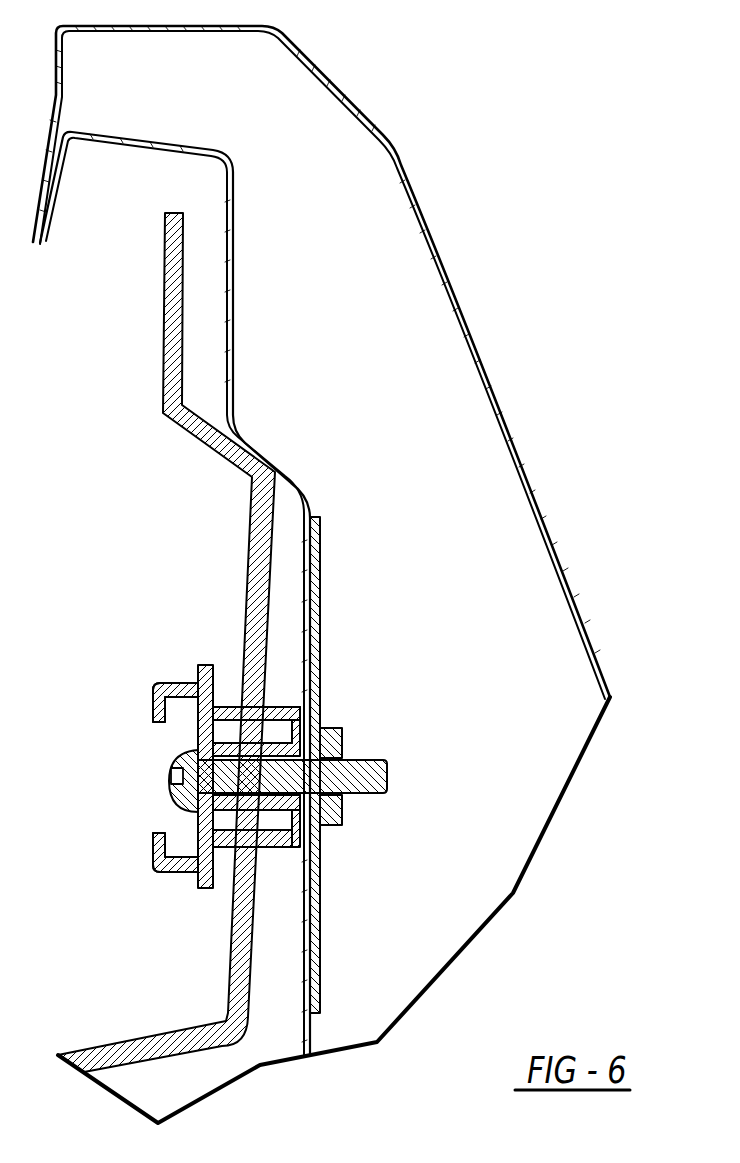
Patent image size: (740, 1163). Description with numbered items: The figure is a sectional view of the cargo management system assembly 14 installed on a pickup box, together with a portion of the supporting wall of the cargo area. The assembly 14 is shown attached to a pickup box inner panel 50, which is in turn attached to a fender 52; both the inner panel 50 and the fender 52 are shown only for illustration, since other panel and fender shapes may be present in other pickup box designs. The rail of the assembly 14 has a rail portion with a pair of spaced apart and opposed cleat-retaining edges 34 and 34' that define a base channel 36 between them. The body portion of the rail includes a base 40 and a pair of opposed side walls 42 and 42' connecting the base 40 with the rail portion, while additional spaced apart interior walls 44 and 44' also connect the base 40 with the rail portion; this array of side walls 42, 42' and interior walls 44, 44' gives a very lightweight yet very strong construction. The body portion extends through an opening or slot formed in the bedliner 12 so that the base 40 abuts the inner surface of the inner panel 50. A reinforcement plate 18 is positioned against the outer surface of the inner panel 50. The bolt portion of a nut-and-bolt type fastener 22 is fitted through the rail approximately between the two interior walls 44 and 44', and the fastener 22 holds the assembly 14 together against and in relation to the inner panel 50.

The bedliner 12 is at (172, 317).
The cargo management system assembly 14 is at (178, 683).
The reinforcement plate 18 is at (312, 927).
The mechanical fastener 22 is at (186, 750).
The cleat-retaining edge 34 is at (144, 878).
The cleat-retaining edge 34' is at (126, 697).
The base channel 36 is at (195, 840).
The base 40 is at (299, 730).
The side wall 42 is at (229, 908).
The side wall 42' is at (230, 643).
The interior wall 44 is at (324, 844).
The interior wall 44' is at (312, 687).
The pickup box inner panel 50 is at (233, 283).
The fender 52 is at (393, 142).